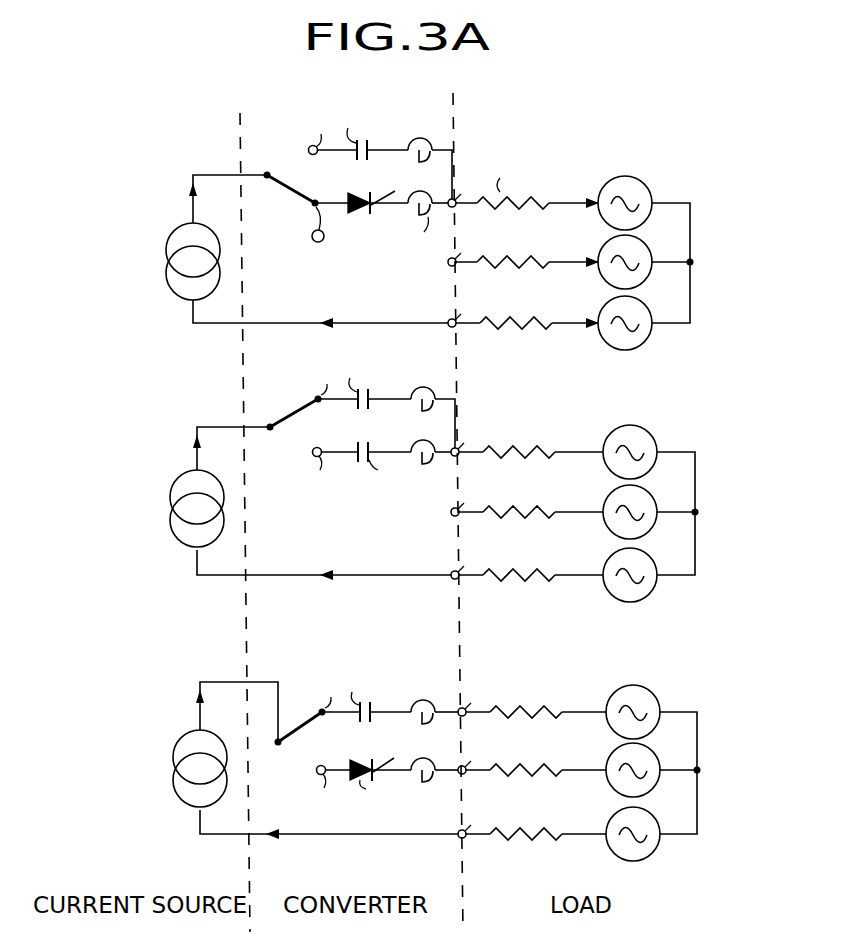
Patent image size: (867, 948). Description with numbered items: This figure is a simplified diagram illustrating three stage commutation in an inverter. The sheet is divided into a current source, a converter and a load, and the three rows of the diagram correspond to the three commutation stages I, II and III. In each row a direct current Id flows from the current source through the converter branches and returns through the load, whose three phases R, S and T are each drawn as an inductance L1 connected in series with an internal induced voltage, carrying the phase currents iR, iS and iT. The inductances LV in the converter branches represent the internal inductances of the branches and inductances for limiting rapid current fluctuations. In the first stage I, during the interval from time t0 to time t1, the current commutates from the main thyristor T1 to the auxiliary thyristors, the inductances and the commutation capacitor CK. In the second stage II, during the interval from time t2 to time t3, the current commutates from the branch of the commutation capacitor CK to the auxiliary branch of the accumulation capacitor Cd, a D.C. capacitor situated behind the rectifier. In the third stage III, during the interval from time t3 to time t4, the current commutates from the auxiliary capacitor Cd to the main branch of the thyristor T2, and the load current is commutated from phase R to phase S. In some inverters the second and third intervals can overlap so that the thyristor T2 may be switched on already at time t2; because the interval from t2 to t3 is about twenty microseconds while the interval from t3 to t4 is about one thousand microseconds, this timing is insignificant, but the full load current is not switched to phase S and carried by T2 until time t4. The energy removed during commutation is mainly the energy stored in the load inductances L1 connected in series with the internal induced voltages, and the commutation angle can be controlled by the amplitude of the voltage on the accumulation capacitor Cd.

The direct current Id is at (306, 507).
The time t0 is at (294, 207).
The time t1 is at (309, 135).
The time t2 is at (297, 399).
The time t3 is at (303, 597).
The time t4 is at (315, 787).
The commutation capacitor CK is at (364, 258).
The accumulation capacitor Cd is at (366, 582).
The inductances LV is at (426, 182).
The main thyristor T1 is at (361, 219).
The main thyristor T2 is at (368, 783).
The inductance connected in series with internal induced voltage L1 is at (527, 186).
The phase R is at (464, 447).
The phase S is at (465, 506).
The phase T is at (464, 568).
The phase R current iR is at (583, 191).
The phase S current iS is at (527, 251).
The phase T current iT is at (527, 313).
The first stage I is at (670, 263).
The second stage II is at (602, 513).
The third stage III is at (607, 773).